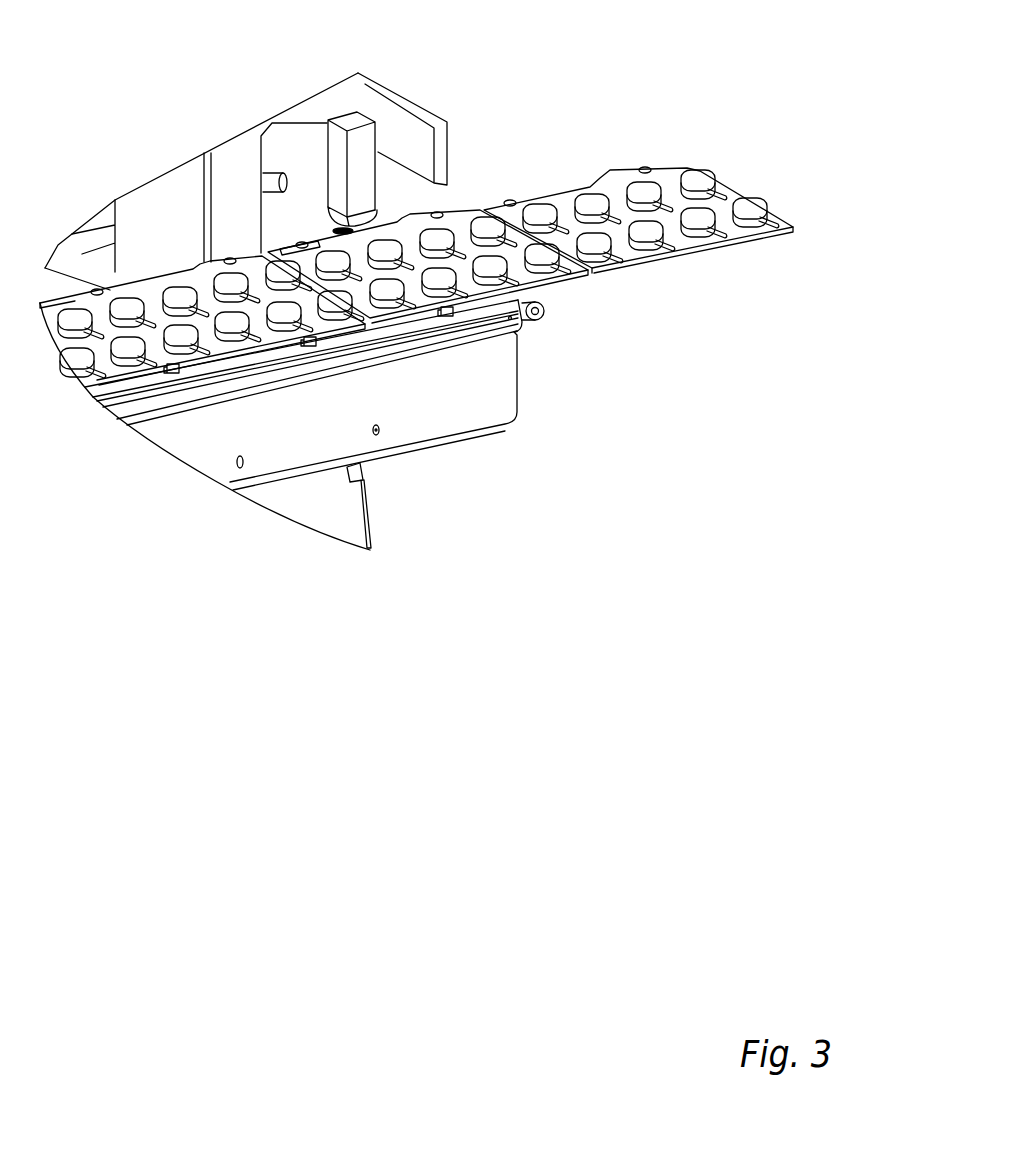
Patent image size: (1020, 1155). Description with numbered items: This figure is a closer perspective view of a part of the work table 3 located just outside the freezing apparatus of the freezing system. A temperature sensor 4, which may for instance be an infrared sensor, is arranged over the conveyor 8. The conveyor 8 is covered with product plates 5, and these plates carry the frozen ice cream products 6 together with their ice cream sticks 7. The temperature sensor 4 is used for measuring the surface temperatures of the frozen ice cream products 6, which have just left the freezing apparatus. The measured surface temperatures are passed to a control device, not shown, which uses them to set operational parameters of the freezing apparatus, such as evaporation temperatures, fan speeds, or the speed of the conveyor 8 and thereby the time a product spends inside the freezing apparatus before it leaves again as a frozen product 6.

The work table 3 is at (427, 408).
The temperature sensor 4 is at (337, 175).
The product plate 5 is at (654, 148).
The frozen ice cream product 6 is at (645, 185).
The ice cream stick 7 is at (667, 207).
The conveyor 8 is at (173, 276).